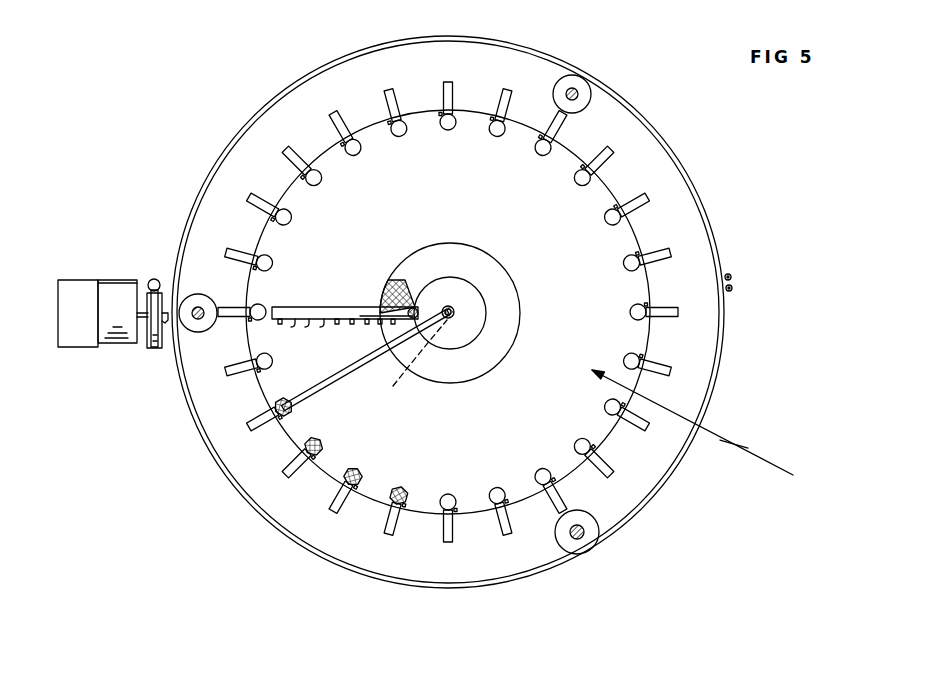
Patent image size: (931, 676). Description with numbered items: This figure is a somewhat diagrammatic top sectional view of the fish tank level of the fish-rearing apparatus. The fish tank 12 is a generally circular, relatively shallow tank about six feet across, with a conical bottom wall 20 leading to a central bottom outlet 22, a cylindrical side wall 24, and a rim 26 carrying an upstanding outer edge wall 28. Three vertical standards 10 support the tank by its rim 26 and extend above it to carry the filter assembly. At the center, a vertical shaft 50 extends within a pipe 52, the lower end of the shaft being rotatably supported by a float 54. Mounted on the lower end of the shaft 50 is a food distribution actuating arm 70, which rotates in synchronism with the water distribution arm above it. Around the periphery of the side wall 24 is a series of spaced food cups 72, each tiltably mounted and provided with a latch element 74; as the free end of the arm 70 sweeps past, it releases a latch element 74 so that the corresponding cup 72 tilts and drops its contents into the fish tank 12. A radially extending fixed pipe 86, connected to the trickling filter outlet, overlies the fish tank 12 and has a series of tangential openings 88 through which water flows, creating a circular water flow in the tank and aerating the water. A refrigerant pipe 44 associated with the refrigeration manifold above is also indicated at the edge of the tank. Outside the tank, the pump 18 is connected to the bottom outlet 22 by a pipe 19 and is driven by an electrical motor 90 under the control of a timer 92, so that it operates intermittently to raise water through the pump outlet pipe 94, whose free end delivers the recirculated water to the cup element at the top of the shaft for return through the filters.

The vertical standards 10 is at (578, 92).
The fish tank 12 is at (702, 429).
The pump 18 is at (152, 350).
The pipe 19 is at (167, 326).
The conical bottom wall 20 is at (556, 269).
The central bottom outlet 22 is at (410, 361).
The cylindrical side wall 24 is at (648, 290).
The rim 26 is at (693, 318).
The upstanding outer edge wall 28 is at (723, 372).
The refrigerant pipe 44 is at (732, 288).
The vertical shaft 50 is at (446, 309).
The pipe 52 is at (452, 311).
The float 54 is at (478, 329).
The food distribution actuating arm 70 is at (358, 365).
The food cups 72 is at (450, 127).
The latch element 74 is at (383, 127).
The radially extending fixed pipe 86 is at (366, 306).
The tangential openings 88 is at (314, 325).
The electrical motor 90 is at (115, 294).
The timer 92 is at (72, 292).
The pump outlet pipe 94 is at (152, 279).